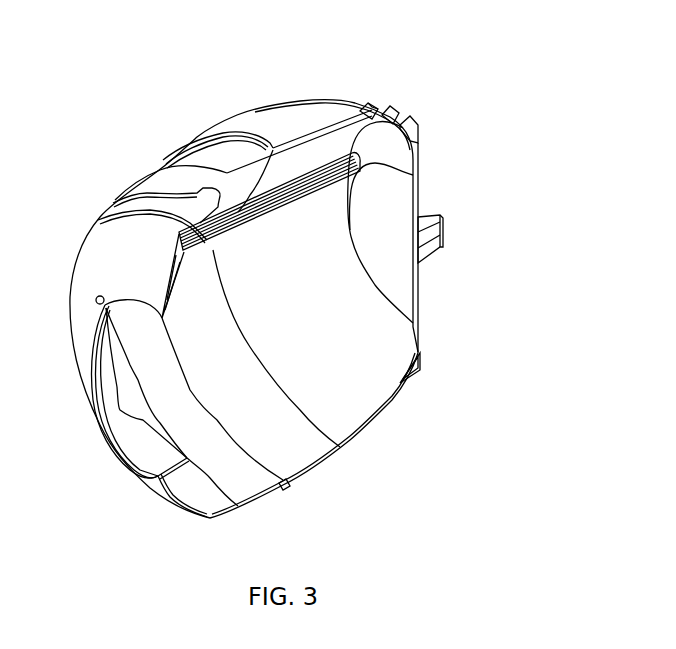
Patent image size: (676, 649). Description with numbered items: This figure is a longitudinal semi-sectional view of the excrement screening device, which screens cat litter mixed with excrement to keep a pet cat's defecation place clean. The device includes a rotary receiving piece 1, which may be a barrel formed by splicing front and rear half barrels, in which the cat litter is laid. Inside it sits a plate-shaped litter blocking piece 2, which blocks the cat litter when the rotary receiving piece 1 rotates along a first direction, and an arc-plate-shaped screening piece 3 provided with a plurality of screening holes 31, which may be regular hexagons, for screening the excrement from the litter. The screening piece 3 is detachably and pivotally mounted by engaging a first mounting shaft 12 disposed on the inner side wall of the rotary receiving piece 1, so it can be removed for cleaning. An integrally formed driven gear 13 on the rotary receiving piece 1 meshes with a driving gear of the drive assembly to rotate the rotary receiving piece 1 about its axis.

The rotary receiving piece 1 is at (183, 167).
The litter blocking piece 2 is at (278, 165).
The screening piece 3 is at (318, 173).
The first mounting shaft 12 is at (358, 162).
The driven gear 13 is at (407, 128).
The screening hole 31 is at (243, 207).